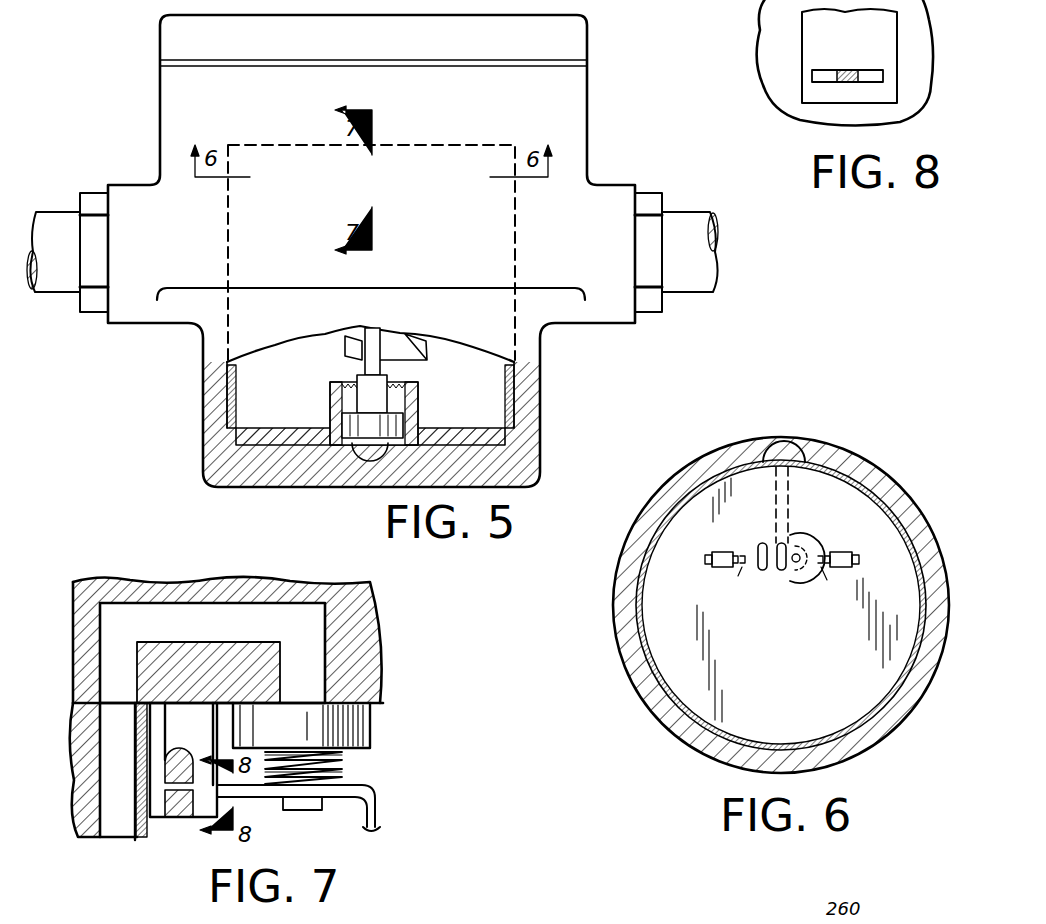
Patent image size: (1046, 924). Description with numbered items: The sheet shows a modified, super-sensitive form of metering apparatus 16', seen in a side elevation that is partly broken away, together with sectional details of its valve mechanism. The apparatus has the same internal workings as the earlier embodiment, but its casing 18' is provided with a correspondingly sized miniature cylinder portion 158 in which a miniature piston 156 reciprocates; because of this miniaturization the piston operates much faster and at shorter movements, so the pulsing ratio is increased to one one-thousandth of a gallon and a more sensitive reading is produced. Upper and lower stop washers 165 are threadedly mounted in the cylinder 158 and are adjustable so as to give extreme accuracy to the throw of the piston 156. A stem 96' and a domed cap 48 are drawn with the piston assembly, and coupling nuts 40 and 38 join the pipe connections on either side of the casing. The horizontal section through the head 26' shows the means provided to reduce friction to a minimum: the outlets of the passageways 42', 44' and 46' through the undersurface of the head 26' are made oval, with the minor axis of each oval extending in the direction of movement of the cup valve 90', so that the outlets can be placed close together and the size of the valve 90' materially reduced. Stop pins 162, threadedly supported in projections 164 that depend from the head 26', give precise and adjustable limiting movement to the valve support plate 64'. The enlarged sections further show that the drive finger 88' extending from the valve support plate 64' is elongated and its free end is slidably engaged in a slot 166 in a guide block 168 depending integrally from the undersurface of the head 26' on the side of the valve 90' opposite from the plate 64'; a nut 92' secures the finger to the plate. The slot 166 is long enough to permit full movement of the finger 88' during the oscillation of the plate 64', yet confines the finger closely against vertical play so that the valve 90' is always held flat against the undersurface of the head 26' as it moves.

In FIG. 5, the metering apparatus 16' is at (372, 251).
In FIG. 5, the casing 18' is at (351, 406).
In FIG. 7, the casing 18' is at (90, 771).
In FIG. 8, the head 26' is at (828, 63).
In FIG. 6, the head 26' is at (760, 605).
In FIG. 7, the head 26' is at (244, 640).
In FIG. 5, the right coupling nut 38 is at (618, 305).
In FIG. 5, the left coupling nut 40 is at (137, 304).
In FIG. 6, the passageway 42' is at (836, 496).
In FIG. 6, the passageway 44' is at (766, 576).
In FIG. 6, the passageway 46' is at (759, 518).
In FIG. 7, the passageway 46' is at (208, 628).
In FIG. 5, the dome / valve cap 48 is at (377, 460).
In FIG. 6, the dome / valve cap 48 is at (778, 455).
In FIG. 7, the valve support plate 64' is at (397, 808).
In FIG. 8, the drive finger 88' is at (843, 111).
In FIG. 7, the drive finger 88' is at (298, 810).
In FIG. 6, the cup valve 90' is at (820, 499).
In FIG. 7, the cup valve 90' is at (326, 725).
In FIG. 7, the nut 92' is at (309, 822).
In FIG. 5, the valve stem 96' is at (349, 370).
In FIG. 5, the miniature piston 156 is at (363, 436).
In FIG. 5, the miniature cylinder portion 158 is at (337, 392).
In FIG. 6, the stop pin 162 is at (780, 586).
In FIG. 6, the projection 164 is at (712, 553).
In FIG. 5, the stop washer 165 is at (395, 382).
In FIG. 8, the slot 166 is at (812, 77).
In FIG. 7, the slot 166 is at (170, 788).
In FIG. 8, the guide block 168 is at (813, 45).
In FIG. 7, the guide block 168 is at (185, 818).